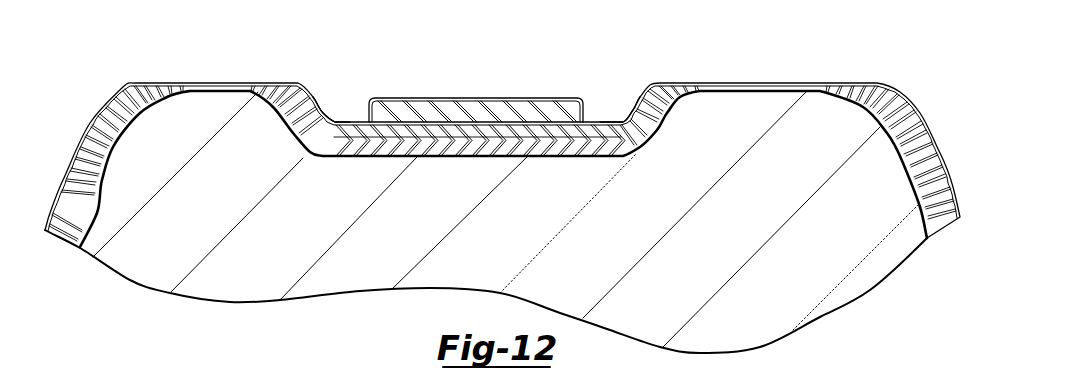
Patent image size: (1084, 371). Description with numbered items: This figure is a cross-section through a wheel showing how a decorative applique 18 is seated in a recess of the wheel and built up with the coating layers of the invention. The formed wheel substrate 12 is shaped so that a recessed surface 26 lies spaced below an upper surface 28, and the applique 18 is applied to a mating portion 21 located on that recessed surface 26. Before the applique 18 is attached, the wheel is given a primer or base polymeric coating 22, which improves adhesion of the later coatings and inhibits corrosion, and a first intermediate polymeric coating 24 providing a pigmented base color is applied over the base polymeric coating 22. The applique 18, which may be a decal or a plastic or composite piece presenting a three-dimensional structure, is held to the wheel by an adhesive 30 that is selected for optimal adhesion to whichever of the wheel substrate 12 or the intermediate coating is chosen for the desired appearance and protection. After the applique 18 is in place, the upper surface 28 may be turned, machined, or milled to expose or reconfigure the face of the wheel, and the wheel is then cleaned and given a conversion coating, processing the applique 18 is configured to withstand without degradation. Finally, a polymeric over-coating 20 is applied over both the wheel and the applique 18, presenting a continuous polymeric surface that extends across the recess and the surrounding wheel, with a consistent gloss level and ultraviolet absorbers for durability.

The wheel substrate 12 is at (502, 230).
The decorative applique 18 is at (508, 110).
The polymeric over-coating 20 is at (470, 98).
The mating portion 21 is at (608, 118).
The base polymeric coating 22 is at (127, 116).
The first intermediate polymeric coating 24 is at (108, 103).
The recessed surface 26 is at (333, 121).
The upper surface 28 is at (222, 87).
The adhesive 30 is at (450, 121).